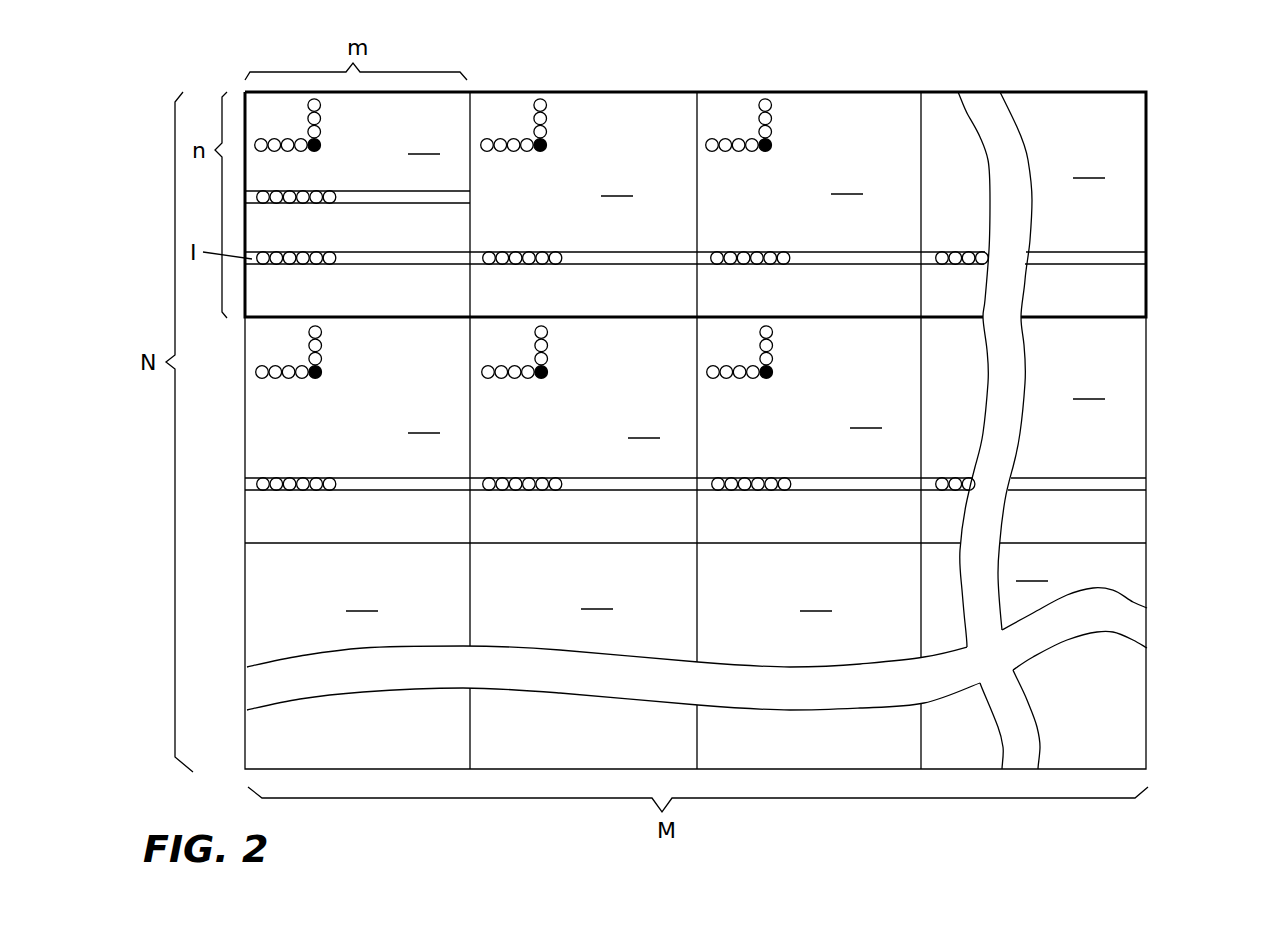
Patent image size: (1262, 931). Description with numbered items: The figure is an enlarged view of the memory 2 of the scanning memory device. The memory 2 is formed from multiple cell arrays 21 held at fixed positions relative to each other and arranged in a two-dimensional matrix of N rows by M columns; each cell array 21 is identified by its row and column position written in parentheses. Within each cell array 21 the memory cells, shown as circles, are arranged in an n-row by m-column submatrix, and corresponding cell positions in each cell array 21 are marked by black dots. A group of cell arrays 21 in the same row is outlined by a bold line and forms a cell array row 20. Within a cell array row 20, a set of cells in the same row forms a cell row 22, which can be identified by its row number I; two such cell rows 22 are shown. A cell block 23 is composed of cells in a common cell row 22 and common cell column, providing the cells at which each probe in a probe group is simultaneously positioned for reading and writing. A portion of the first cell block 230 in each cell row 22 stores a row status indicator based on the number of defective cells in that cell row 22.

The memory 2 is at (1188, 114).
The cell array row 20 is at (877, 92).
The cell array 21 is at (695, 430).
The cell row 22 is at (1098, 251).
The cell block 23 is at (318, 265).
The first cell block 230 is at (262, 254).